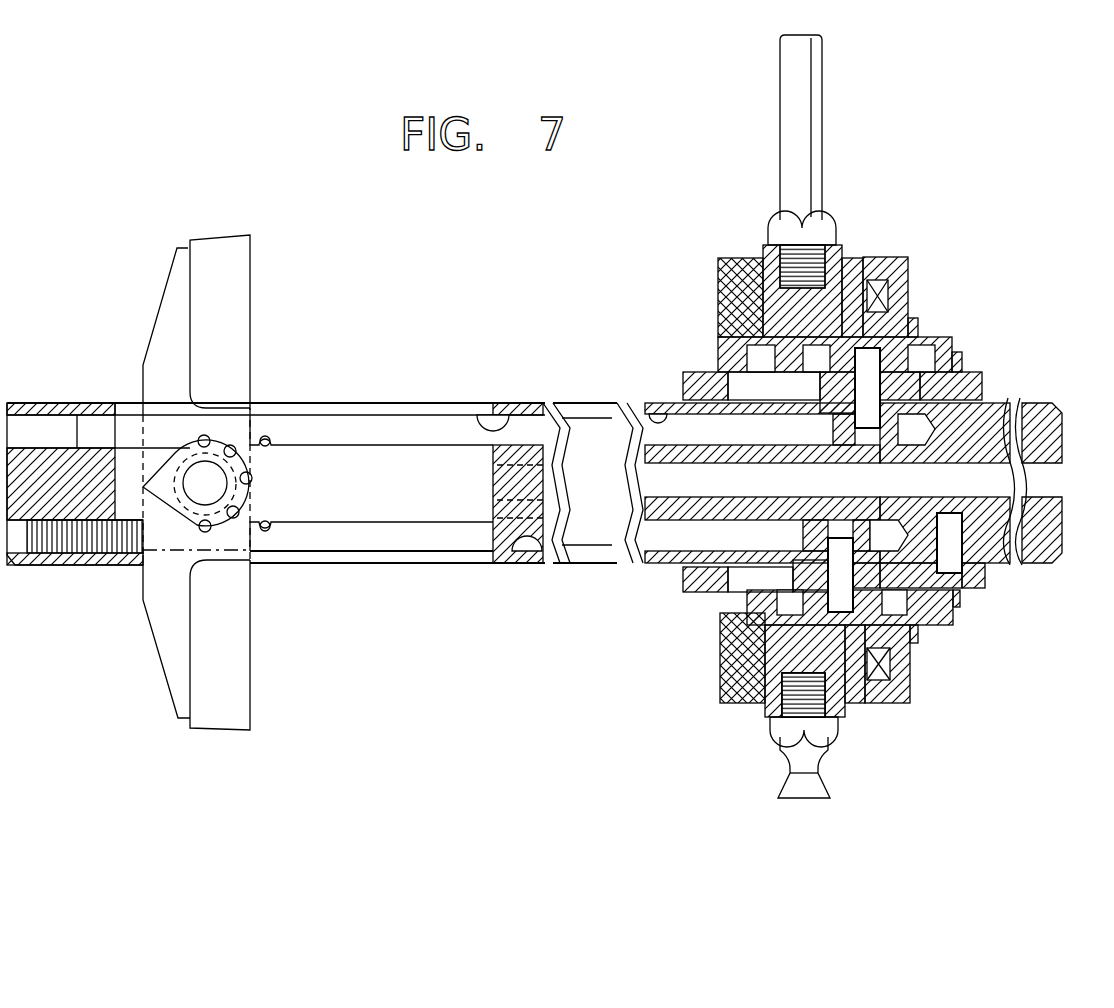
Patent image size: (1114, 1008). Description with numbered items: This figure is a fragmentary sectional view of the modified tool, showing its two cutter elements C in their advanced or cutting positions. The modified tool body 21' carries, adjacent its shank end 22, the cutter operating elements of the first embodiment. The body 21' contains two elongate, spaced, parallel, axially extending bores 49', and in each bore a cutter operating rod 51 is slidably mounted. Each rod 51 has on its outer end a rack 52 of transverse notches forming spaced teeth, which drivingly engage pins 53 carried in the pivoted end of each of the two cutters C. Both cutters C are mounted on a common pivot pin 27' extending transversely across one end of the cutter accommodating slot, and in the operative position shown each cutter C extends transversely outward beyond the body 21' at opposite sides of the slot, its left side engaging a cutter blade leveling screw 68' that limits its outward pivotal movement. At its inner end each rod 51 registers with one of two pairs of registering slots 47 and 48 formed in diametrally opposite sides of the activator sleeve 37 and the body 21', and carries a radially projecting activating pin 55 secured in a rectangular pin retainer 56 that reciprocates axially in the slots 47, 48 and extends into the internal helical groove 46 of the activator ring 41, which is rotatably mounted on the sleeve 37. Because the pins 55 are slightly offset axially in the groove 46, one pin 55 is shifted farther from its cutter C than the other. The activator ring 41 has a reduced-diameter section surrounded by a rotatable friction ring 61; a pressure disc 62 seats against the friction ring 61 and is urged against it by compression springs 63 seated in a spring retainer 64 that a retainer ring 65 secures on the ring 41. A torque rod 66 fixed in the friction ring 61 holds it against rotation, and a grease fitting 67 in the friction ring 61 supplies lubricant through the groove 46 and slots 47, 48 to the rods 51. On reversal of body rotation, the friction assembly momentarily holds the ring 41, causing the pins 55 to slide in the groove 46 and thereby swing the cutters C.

The shank end 22 is at (1040, 400).
The modified tool body 21' is at (575, 450).
The cutter element C is at (172, 272).
The cutter blade leveling screw 68' is at (75, 578).
The common pivot pin 27' is at (168, 431).
The pins 53 is at (250, 492).
The cutter operating rod 51 is at (400, 420).
The rack 52 is at (268, 437).
The axially extending bores 49' is at (552, 476).
The torque rod 66 is at (822, 88).
The friction ring 61 is at (765, 720).
The cutter activator ring 41 is at (733, 705).
The grease fitting 67 is at (830, 770).
The helical groove 46 is at (757, 338).
The pressure disc 62 is at (850, 257).
The spring retainer 64 is at (893, 258).
The compression springs 63 is at (888, 298).
The activating pin 55 is at (912, 337).
The slot 48 is at (697, 373).
The activator sleeve 37 is at (987, 576).
The slot 47 is at (718, 318).
The pin retainer 56 is at (850, 385).
The retainer ring 65 is at (960, 598).